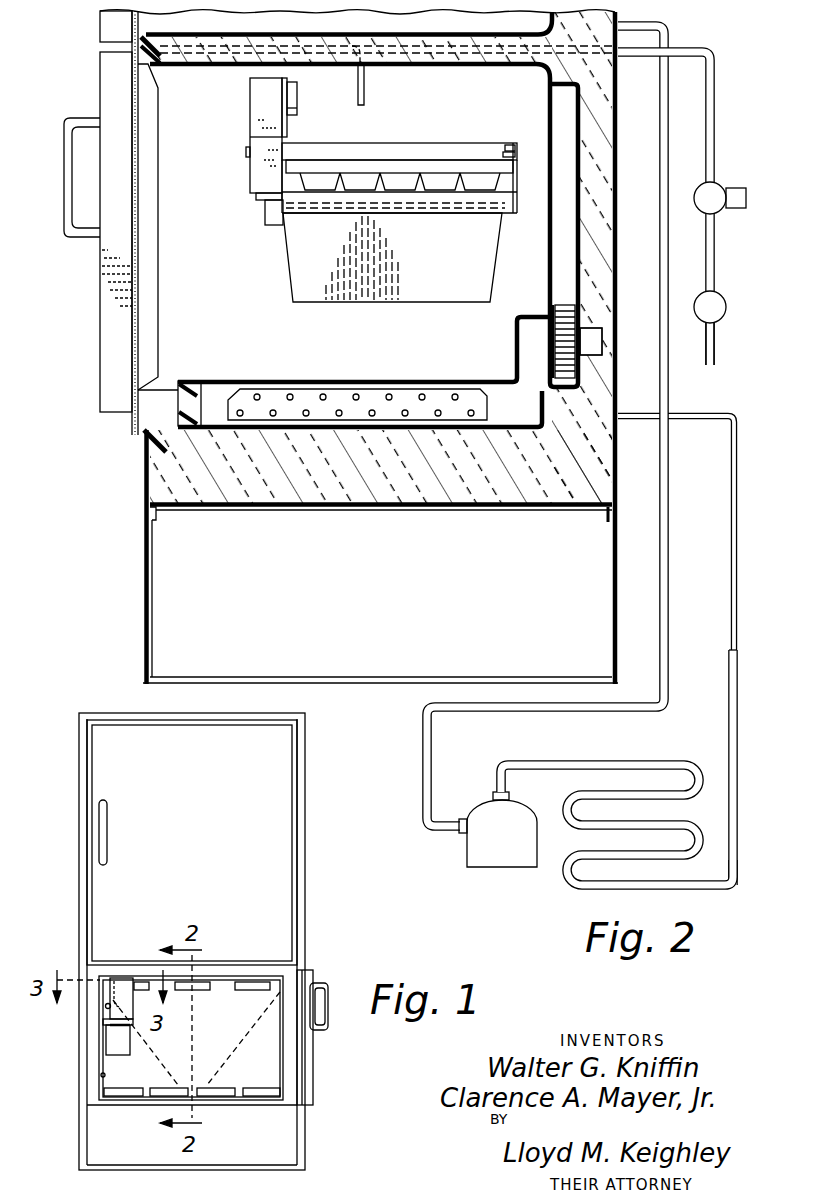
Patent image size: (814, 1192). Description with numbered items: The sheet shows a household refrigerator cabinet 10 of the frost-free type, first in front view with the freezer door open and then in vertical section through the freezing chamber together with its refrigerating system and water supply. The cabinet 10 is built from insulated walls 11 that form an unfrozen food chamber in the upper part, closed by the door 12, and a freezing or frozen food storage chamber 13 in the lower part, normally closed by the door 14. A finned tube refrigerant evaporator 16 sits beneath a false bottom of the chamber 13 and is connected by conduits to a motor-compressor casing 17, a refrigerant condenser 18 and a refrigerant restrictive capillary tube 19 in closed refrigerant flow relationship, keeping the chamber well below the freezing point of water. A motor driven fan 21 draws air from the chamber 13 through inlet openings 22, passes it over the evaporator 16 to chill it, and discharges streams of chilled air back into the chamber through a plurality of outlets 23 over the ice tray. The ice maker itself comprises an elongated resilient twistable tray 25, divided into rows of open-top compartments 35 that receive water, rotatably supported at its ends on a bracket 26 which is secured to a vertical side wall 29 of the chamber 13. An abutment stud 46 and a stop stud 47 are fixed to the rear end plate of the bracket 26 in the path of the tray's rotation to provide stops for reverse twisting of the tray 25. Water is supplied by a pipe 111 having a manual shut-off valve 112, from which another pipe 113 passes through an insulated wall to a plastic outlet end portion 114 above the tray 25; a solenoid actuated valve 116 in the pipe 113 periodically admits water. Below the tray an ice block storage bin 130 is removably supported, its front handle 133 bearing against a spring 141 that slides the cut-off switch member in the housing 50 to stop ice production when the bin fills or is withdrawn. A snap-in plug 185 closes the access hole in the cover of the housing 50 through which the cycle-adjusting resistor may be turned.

In FIG. 2, the refrigerator cabinet 10 is at (142, 575).
In FIG. 1, the refrigerator cabinet 10 is at (79, 845).
In FIG. 2, the insulated walls 11 is at (600, 127).
In FIG. 1, the insulated walls 11 is at (92, 1068).
In FIG. 2, the door 12 is at (102, 22).
In FIG. 1, the door 12 is at (107, 760).
In FIG. 2, the freezing chamber 13 is at (366, 351).
In FIG. 1, the freezing chamber 13 is at (237, 1034).
In FIG. 2, the door 14 is at (103, 360).
In FIG. 1, the door 14 is at (308, 1062).
In FIG. 2, the refrigerant evaporator 16 is at (432, 396).
In FIG. 2, the motor-compressor casing 17 is at (482, 845).
In FIG. 2, the refrigerant condenser 18 is at (640, 790).
In FIG. 2, the capillary tube 19 is at (728, 610).
In FIG. 2, the fan 21 is at (560, 300).
In FIG. 2, the inlet openings 22 is at (178, 390).
In FIG. 1, the inlet openings 22 is at (252, 1092).
In FIG. 2, the outlets 23 is at (547, 96).
In FIG. 1, the outlets 23 is at (247, 986).
In FIG. 2, the tray 25 is at (428, 160).
In FIG. 2, the bracket 26 is at (380, 143).
In FIG. 2, the vertical side wall 29 is at (185, 92).
In FIG. 1, the vertical side wall 29 is at (100, 1080).
In FIG. 2, the compartments 35 is at (472, 182).
In FIG. 2, the abutment stud 46 is at (503, 157).
In FIG. 2, the stop stud 47 is at (508, 145).
In FIG. 2, the housing 50 is at (252, 120).
In FIG. 1, the housing 50 is at (125, 980).
In FIG. 2, the pipe 111 is at (715, 348).
In FIG. 2, the shut-off valve 112 is at (717, 293).
In FIG. 2, the pipe 113 is at (700, 50).
In FIG. 2, the outlet end portion 114 is at (358, 90).
In FIG. 2, the solenoid actuated valve 116 is at (729, 190).
In FIG. 2, the ice block storage bin 130 is at (287, 270).
In FIG. 1, the ice block storage bin 130 is at (106, 1040).
In FIG. 2, the handle 133 is at (266, 212).
In FIG. 1, the handle 133 is at (120, 1026).
In FIG. 2, the spring 141 is at (262, 197).
In FIG. 2, the plug 185 is at (247, 152).
In FIG. 1, the plug 185 is at (106, 978).